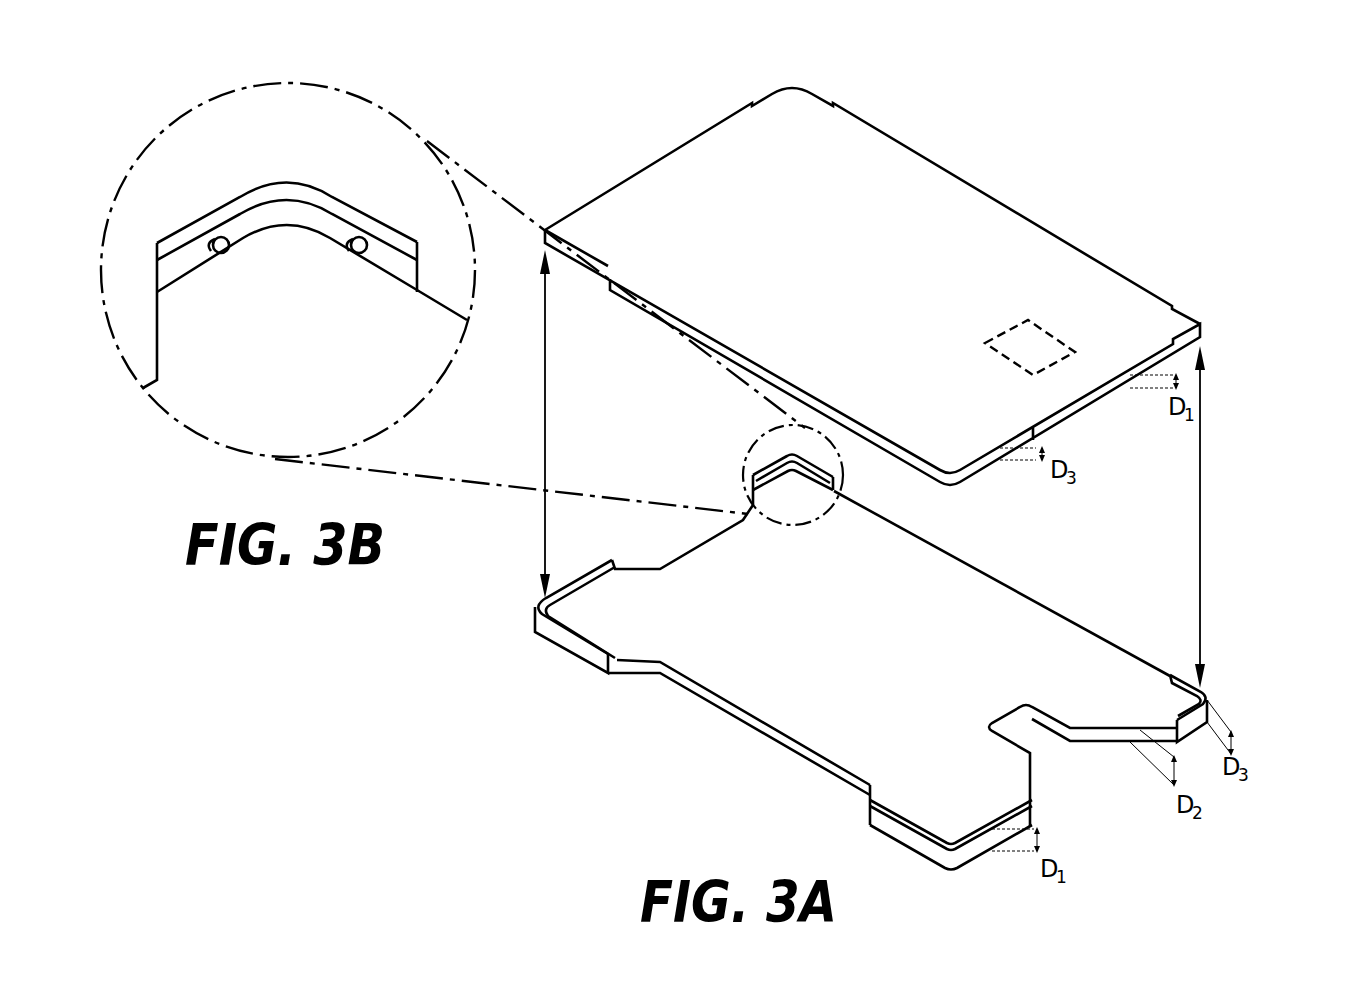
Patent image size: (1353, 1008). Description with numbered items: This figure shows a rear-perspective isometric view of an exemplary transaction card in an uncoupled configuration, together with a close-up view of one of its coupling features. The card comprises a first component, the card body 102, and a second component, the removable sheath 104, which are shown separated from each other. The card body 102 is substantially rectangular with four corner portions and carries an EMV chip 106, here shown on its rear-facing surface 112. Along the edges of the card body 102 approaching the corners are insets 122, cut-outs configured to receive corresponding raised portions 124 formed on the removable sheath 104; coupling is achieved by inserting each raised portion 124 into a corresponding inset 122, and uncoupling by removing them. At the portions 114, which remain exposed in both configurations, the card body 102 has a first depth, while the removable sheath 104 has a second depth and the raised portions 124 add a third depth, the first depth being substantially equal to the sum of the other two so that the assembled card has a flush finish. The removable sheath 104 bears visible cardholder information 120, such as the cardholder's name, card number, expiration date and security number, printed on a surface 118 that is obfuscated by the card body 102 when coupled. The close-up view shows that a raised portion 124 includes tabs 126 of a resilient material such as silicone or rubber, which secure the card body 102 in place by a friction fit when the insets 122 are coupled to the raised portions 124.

In FIG. 3A, the card body 102 is at (968, 155).
In FIG. 3A, the removable sheath 104 is at (885, 662).
In FIG. 3A, the EMV chip 106 is at (1038, 334).
In FIG. 3A, the rear-facing surface 112 is at (877, 282).
In FIG. 3A, the portions 114 is at (715, 337).
In FIG. 3A, the surface 118 is at (940, 715).
In FIG. 3A, the visible cardholder information 120 is at (962, 640).
In FIG. 3A, the insets 122 is at (820, 74).
In FIG. 3A, the raised portions 124 is at (824, 463).
In FIG. 3B, the raised portions 124 is at (394, 231).
In FIG. 3B, the tabs 126 is at (350, 238).